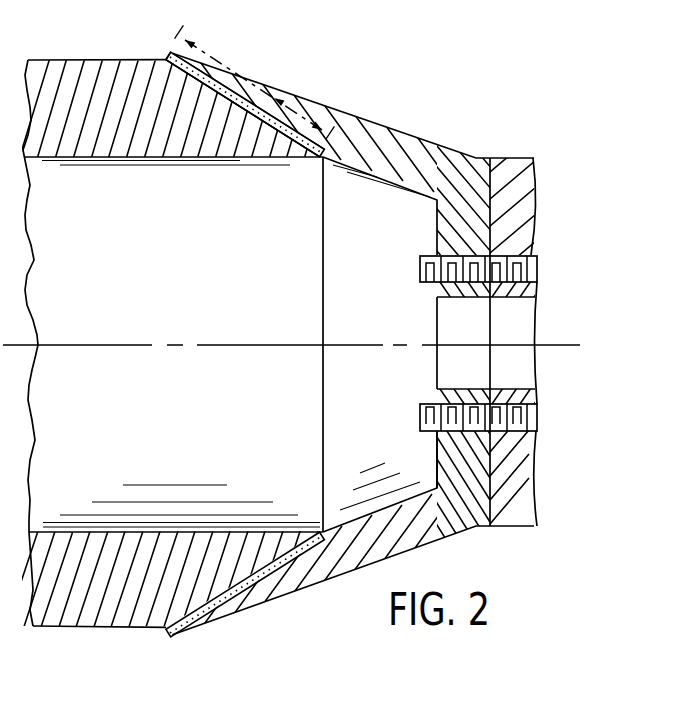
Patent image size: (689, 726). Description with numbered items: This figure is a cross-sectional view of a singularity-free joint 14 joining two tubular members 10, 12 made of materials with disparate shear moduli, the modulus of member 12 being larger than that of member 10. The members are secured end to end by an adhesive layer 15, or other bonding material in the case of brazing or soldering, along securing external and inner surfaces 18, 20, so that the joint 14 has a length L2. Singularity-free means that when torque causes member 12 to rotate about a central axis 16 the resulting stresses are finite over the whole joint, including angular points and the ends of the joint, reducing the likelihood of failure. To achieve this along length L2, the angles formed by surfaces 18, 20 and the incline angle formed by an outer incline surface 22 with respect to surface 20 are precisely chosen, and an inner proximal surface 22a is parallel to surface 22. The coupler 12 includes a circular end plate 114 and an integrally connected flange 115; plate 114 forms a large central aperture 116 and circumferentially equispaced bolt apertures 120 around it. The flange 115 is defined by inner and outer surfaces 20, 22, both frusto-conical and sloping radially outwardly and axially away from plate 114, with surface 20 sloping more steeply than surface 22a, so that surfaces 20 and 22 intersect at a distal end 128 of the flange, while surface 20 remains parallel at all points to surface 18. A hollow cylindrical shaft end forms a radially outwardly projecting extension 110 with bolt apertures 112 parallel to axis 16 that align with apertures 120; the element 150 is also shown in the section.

The tubular member 10 is at (92, 65).
The tubular member (coupler) 12 is at (445, 163).
The singularity-free securing joint 14 is at (163, 57).
The adhesive layer 15 is at (284, 133).
The central axis 16 is at (563, 346).
The external surface 18 is at (204, 85).
The inner surface 20 is at (239, 107).
The outer incline surface 22 is at (319, 106).
The inner proximal surface 22a is at (379, 182).
The radially outwardly projecting extension 110 is at (533, 204).
The bolt apertures 112 is at (513, 423).
The circular end plate 114 is at (487, 453).
The flange 115 is at (381, 146).
The central aperture 116 is at (467, 389).
The bolt apertures 120 is at (452, 428).
The distal end of flange 128 is at (183, 72).
The upper sealing ring 150 is at (524, 307).
The joint length L2 is at (284, 95).